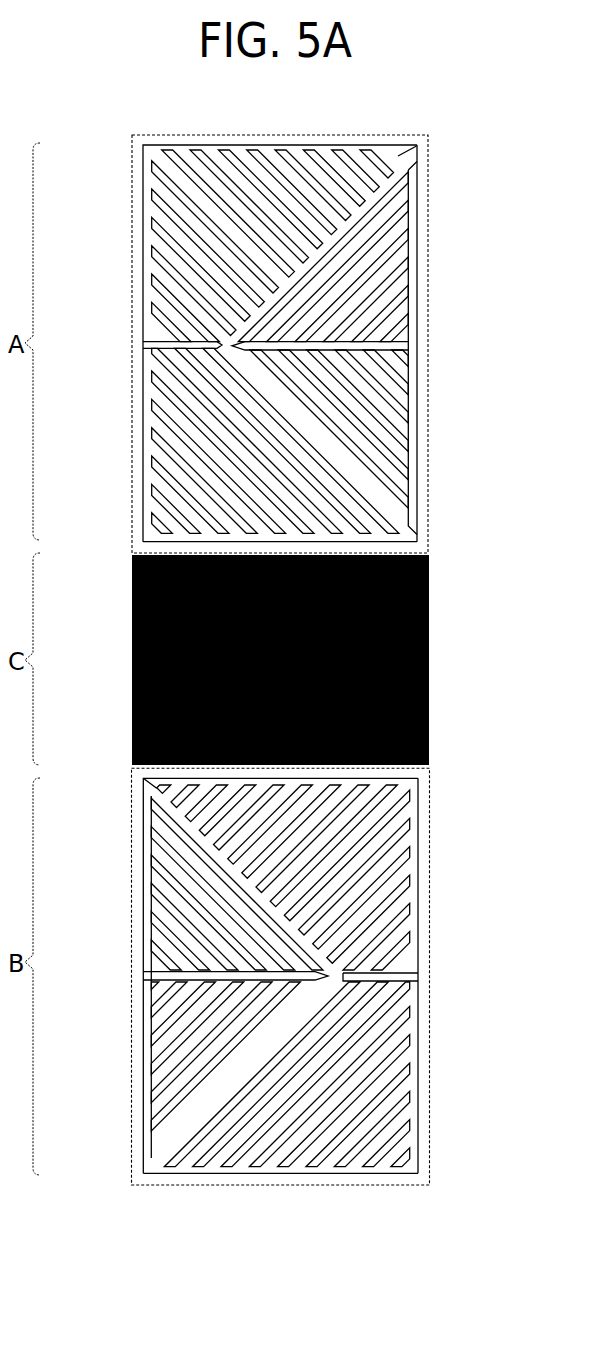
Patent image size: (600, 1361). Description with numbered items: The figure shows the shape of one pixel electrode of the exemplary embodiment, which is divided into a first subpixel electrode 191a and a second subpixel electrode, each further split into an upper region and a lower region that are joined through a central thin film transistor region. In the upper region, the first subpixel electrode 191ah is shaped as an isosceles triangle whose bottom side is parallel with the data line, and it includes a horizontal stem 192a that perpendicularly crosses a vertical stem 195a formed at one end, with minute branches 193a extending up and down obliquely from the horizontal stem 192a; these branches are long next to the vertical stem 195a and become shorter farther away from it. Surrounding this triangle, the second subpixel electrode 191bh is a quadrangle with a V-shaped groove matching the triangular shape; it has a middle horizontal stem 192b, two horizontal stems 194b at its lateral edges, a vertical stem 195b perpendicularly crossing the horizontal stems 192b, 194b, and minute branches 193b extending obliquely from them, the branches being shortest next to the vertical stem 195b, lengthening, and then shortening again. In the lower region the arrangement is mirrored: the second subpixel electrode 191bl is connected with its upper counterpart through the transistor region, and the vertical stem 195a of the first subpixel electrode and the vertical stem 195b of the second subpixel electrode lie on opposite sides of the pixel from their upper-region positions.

The second subpixel electrode in region A 191bh is at (230, 150).
The first subpixel electrode in region A 191ah is at (417, 275).
The first subpixel electrode 191a is at (140, 888).
The second subpixel electrode in region B 191bl is at (418, 917).
The horizontal stem 192a is at (412, 342).
The horizontal stem 192b is at (217, 343).
The minute branches 193a is at (385, 229).
The minute branches 193b is at (152, 274).
The horizontal stems 194b is at (386, 150).
The vertical stem 195a is at (417, 373).
The vertical stem 195b is at (152, 205).